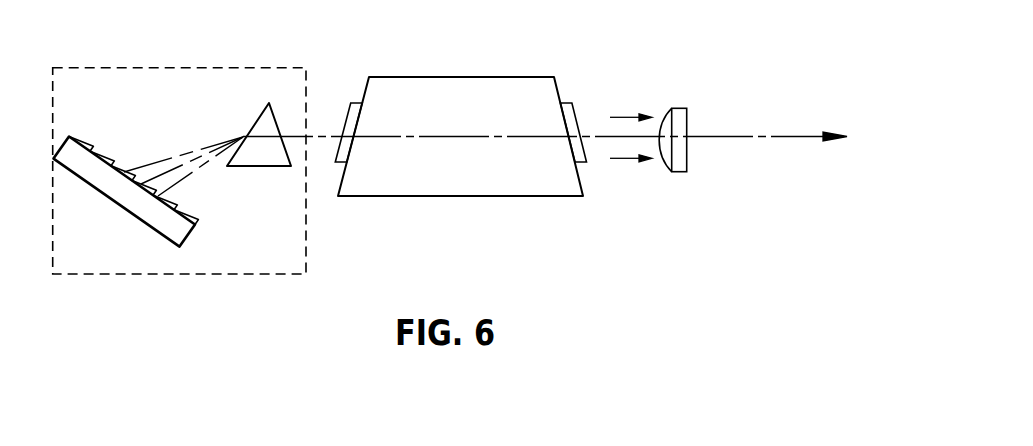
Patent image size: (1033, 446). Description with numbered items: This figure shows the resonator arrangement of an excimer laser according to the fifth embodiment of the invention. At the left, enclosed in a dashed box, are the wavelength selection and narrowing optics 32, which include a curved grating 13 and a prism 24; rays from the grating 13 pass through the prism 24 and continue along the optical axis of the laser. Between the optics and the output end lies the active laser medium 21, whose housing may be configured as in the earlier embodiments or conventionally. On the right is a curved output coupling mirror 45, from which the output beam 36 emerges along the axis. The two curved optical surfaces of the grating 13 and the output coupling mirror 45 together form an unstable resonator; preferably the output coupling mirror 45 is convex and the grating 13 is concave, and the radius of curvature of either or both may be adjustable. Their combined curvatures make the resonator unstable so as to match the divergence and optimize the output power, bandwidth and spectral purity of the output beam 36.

The wavelength selection and narrowing optics 32 is at (159, 97).
The curved grating 13 is at (188, 235).
The prism 24 is at (269, 160).
The active laser medium 21 is at (469, 180).
The curved output coupling mirror 45 is at (680, 108).
The output beam 36 is at (559, 135).